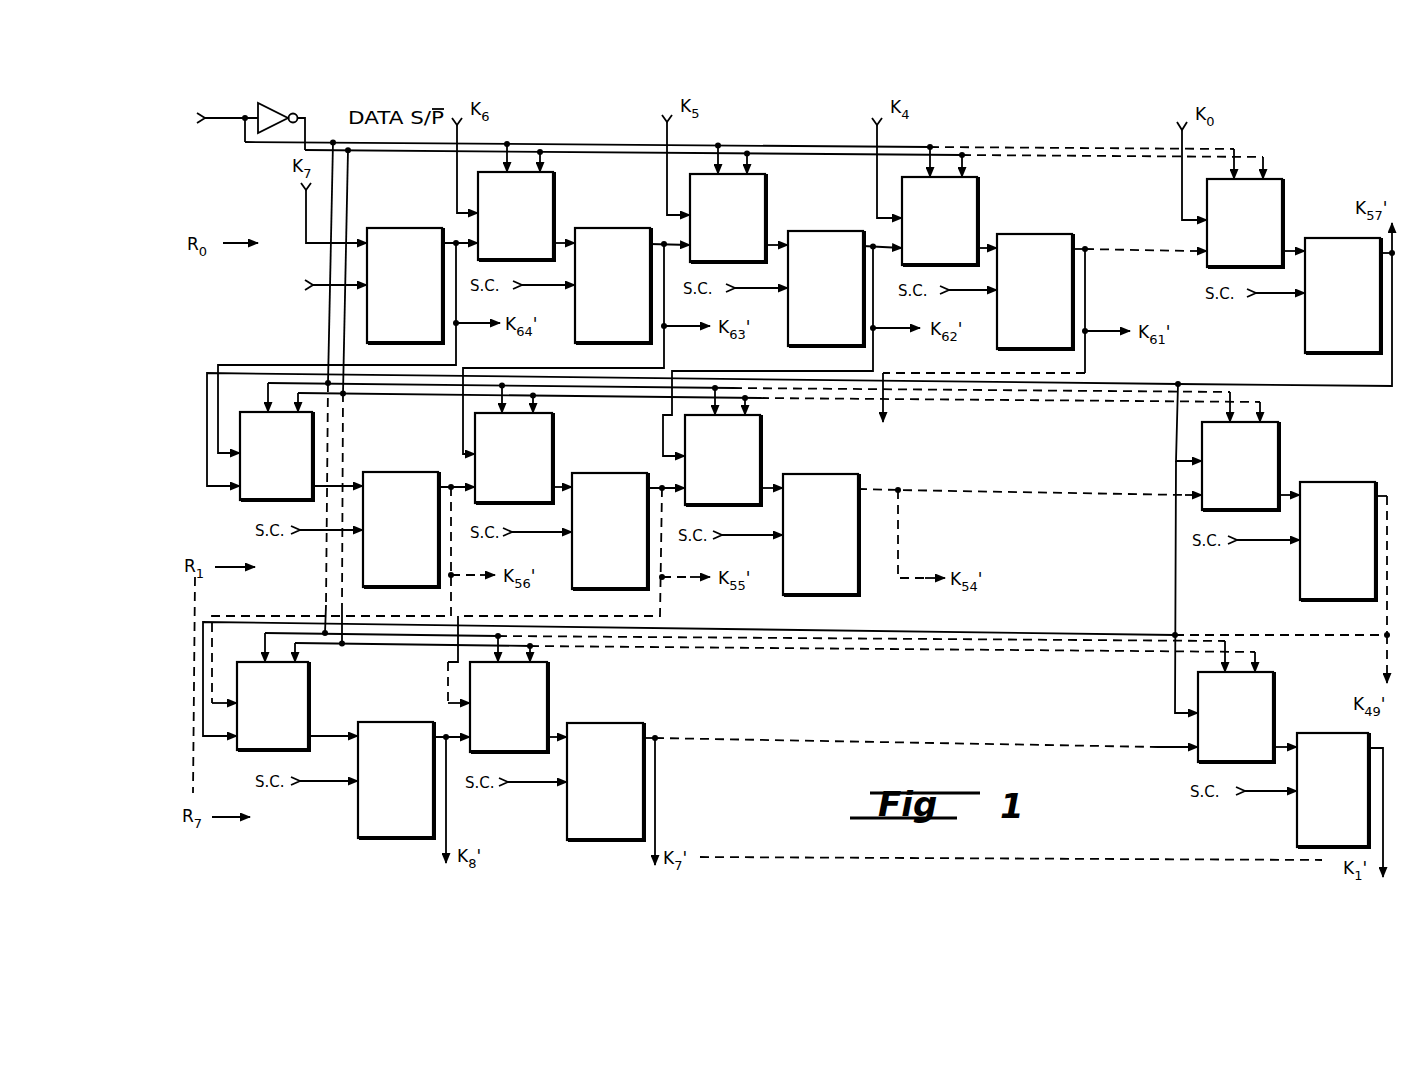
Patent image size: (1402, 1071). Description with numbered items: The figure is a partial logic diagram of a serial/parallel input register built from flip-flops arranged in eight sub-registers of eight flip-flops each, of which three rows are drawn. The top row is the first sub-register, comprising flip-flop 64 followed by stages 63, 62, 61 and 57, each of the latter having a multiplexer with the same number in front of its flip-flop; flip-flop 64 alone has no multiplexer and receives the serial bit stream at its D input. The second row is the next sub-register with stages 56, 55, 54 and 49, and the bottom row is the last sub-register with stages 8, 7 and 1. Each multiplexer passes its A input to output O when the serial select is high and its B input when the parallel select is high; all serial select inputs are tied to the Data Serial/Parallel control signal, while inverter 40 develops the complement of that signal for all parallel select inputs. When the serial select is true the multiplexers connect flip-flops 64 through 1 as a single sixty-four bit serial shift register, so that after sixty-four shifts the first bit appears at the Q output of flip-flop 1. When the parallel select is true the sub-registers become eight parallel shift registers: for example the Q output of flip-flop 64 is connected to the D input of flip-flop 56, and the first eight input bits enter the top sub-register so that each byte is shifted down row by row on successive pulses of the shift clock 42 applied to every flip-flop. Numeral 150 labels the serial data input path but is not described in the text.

The serial data input line 150 is at (344, 114).
The inverter 40 is at (296, 126).
The shift clock 42 is at (313, 288).
The flip-flop 64 is at (405, 285).
The MUX and flip-flop 63 is at (564, 257).
The MUX and flip-flop 62 is at (777, 260).
The MUX and flip-flop 61 is at (987, 263).
The MUX and flip-flop 57 is at (1294, 266).
The MUX and flip-flop 56 is at (339, 499).
The MUX and flip-flop 55 is at (561, 501).
The MUX and flip-flop 54 is at (772, 505).
The MUX and flip-flop 49 is at (1289, 511).
The MUX and flip-flop 8 is at (335, 750).
The MUX and flip-flop 7 is at (557, 751).
The MUX and flip-flop 1 is at (1283, 759).